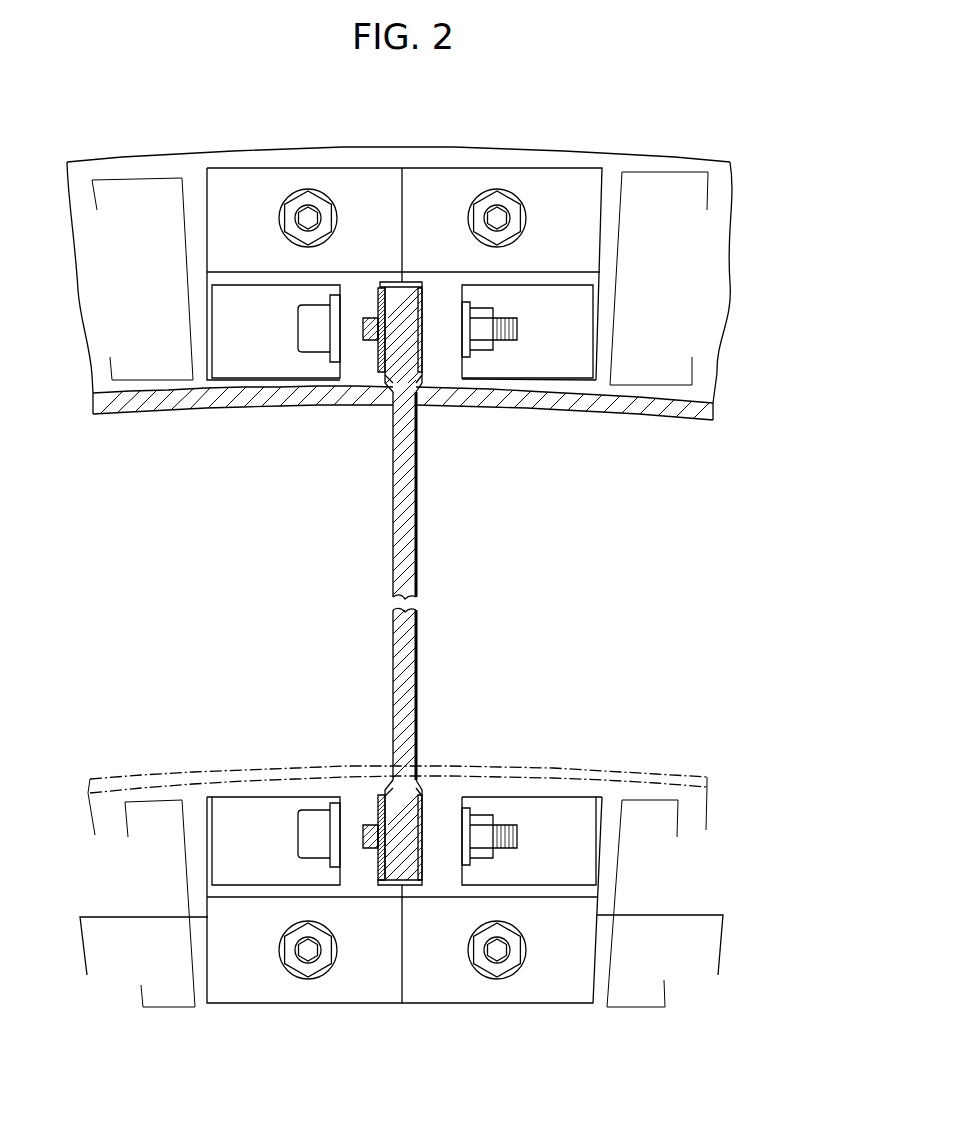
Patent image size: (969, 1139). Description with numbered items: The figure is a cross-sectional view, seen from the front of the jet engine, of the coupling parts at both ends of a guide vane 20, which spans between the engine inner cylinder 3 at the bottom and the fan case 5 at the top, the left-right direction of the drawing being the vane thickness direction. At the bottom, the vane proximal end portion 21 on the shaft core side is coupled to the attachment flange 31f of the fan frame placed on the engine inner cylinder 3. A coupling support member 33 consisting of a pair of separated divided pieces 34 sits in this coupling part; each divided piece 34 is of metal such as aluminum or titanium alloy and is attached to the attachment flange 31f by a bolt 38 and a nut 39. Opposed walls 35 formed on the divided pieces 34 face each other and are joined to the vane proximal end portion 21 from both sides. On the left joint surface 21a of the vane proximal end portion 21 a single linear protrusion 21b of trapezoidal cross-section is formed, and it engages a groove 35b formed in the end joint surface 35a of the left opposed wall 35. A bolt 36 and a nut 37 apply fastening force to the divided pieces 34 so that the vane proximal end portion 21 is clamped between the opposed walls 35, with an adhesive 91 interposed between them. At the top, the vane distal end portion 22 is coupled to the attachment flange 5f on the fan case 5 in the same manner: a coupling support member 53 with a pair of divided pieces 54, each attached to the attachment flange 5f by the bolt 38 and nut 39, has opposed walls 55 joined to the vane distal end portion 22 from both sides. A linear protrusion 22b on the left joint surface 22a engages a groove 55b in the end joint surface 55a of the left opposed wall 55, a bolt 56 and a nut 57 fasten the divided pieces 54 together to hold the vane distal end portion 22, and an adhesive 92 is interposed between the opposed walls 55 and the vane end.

The engine inner cylinder 3 is at (250, 768).
The fan case 5 is at (637, 414).
The attachment flange 5f is at (212, 152).
The guide vane 20 is at (418, 505).
The vane proximal end portion 21 is at (418, 790).
The joint surface 21a is at (378, 885).
The linear protrusion 21b is at (376, 820).
The vane distal end portion 22 is at (418, 395).
The joint surface 22a is at (380, 290).
The linear protrusion 22b is at (378, 362).
The attachment flange 31f is at (650, 915).
The coupling support member 33 is at (160, 1015).
The divided piece 34 is at (365, 993).
The opposed wall 35 is at (338, 870).
The end joint surface 35a is at (386, 797).
The groove 35b is at (365, 838).
The bolt 36 is at (310, 820).
The nut 37 is at (490, 823).
The bolt 38 is at (309, 214).
The nut 39 is at (298, 189).
The coupling support member 53 is at (123, 158).
The divided piece 54 is at (377, 178).
The opposed wall 55 is at (358, 318).
The end joint surface 55a is at (386, 382).
The groove 55b is at (365, 336).
The bolt 56 is at (310, 347).
The nut 57 is at (488, 343).
The adhesive 91 is at (372, 836).
The adhesive 92 is at (382, 325).